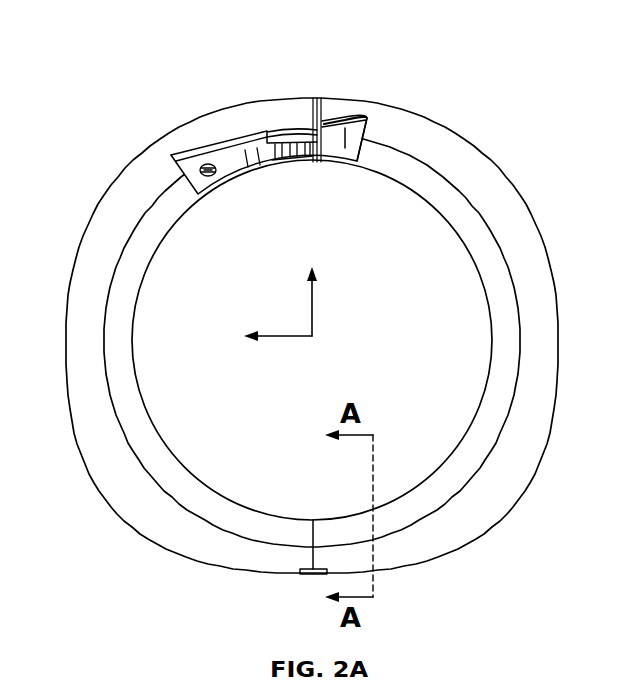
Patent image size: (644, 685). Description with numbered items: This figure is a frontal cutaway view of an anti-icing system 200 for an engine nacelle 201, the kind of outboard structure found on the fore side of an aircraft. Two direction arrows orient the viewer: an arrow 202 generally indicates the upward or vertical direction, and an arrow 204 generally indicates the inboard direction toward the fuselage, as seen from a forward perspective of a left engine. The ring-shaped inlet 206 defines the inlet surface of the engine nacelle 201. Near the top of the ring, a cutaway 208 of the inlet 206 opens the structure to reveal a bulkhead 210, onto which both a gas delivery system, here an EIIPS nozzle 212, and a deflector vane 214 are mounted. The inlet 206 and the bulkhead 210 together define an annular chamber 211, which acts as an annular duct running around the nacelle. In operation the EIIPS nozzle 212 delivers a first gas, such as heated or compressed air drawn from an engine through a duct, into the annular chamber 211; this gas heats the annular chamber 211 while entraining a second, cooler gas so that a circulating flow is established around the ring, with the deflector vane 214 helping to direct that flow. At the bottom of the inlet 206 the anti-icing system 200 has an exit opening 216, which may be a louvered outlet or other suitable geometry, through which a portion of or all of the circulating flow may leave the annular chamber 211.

The anti-icing system 200 is at (122, 58).
The engine nacelle 201 is at (558, 331).
The arrow 202 is at (312, 303).
The arrow 204 is at (280, 337).
The inlet 206 is at (512, 210).
The cutaway 208 is at (298, 131).
The bulkhead 210 is at (345, 158).
The annular chamber 211 is at (358, 118).
The EIIPS nozzle 212 is at (213, 177).
The deflector vane 214 is at (280, 136).
The exit opening 216 is at (317, 575).